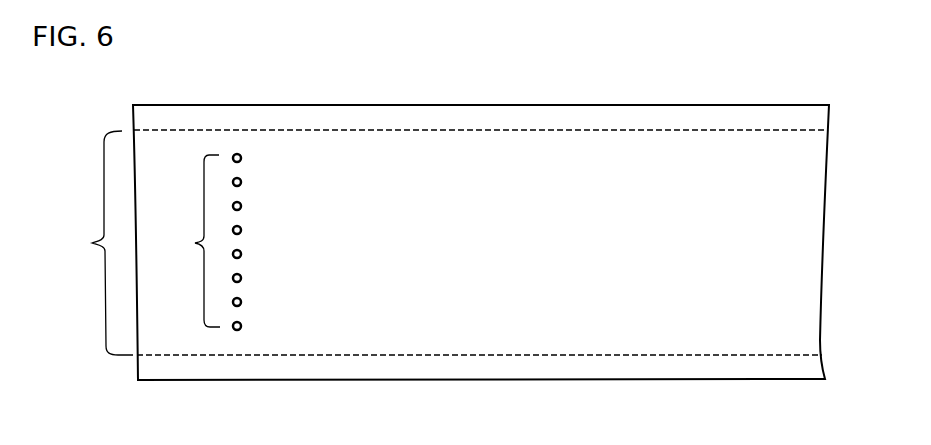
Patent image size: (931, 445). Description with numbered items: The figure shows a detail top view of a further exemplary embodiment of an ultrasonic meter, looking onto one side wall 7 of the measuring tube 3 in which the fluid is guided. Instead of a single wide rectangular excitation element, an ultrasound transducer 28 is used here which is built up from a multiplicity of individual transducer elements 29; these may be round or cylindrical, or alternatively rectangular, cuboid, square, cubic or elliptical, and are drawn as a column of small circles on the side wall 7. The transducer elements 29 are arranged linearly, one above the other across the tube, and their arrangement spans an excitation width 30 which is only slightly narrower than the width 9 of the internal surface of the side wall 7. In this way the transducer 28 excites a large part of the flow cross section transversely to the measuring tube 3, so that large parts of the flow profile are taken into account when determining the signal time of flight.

The measuring tube 3 is at (686, 96).
The side wall 7 is at (441, 325).
The width 9 is at (101, 243).
The ultrasound transducer 28 is at (281, 194).
The transducer elements 29 is at (243, 155).
The excitation width 30 is at (191, 241).